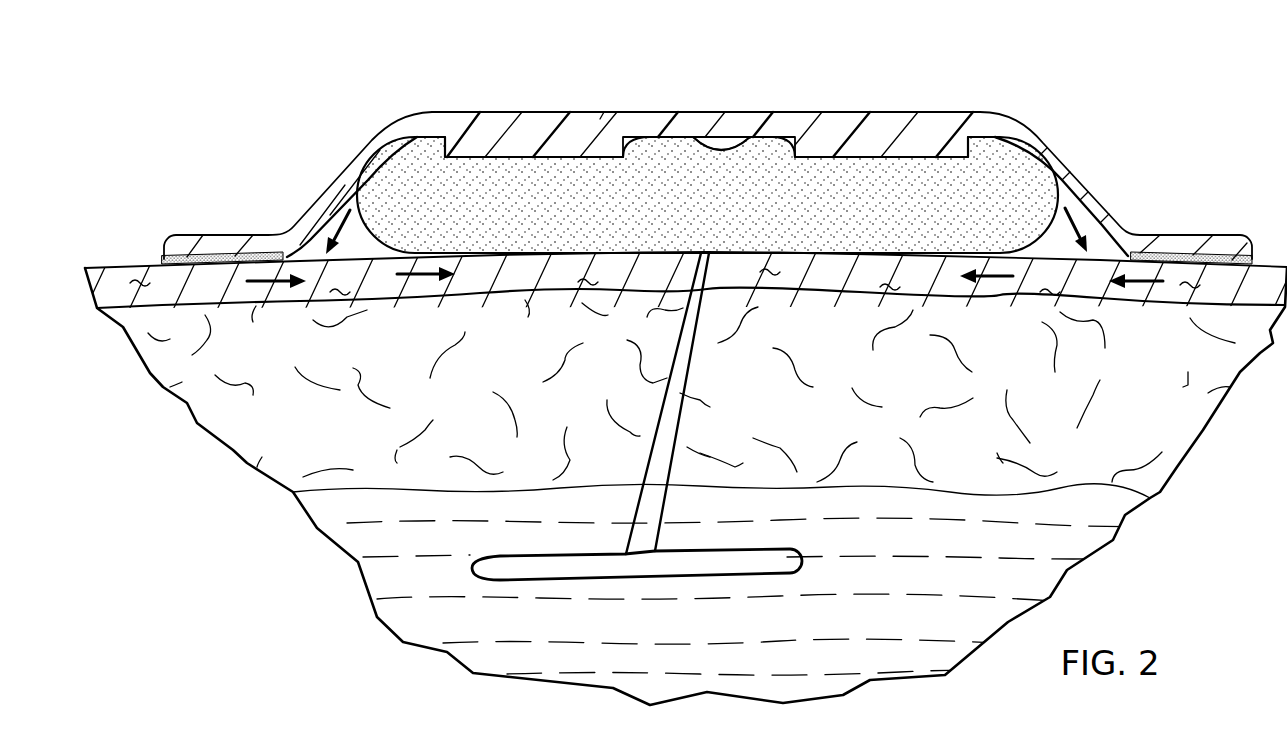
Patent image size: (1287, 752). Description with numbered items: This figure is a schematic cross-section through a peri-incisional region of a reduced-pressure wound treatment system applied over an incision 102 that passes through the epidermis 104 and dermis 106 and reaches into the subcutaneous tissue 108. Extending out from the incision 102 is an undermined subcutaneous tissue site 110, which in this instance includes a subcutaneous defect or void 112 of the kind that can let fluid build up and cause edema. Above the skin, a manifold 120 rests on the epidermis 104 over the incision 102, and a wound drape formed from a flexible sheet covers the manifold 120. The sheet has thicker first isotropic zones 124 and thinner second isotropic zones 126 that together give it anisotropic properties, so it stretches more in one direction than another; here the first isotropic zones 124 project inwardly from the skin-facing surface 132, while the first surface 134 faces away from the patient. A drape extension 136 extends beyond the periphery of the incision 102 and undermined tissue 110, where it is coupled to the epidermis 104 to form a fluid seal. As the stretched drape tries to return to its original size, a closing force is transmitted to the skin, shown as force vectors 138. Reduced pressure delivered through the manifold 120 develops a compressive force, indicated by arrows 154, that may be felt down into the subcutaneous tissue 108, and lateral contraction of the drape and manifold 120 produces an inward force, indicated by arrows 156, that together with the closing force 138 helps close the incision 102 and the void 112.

The incision 102 is at (684, 393).
The epidermis 104 is at (525, 292).
The dermis 106 is at (303, 439).
The subcutaneous tissue 108 is at (832, 606).
The undermined subcutaneous tissue site 110 is at (635, 592).
The void 112 is at (620, 568).
The manifold 120 is at (688, 209).
The first isotropic zones 124 is at (486, 128).
The second isotropic zones 126 is at (358, 148).
The skin-facing surface 132 is at (720, 148).
The first surface 134 is at (600, 119).
The drape extension 136 is at (213, 235).
The force vectors 138 is at (265, 288).
The arrows 154 is at (325, 216).
The arrows 156 is at (402, 288).